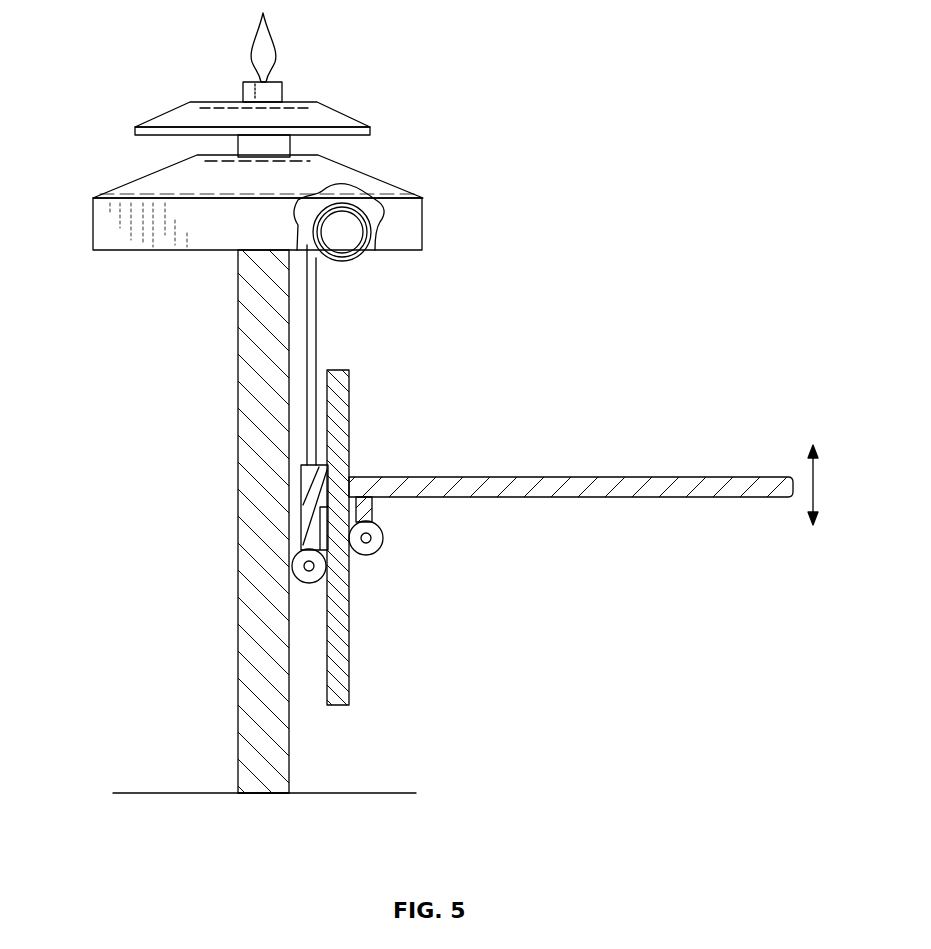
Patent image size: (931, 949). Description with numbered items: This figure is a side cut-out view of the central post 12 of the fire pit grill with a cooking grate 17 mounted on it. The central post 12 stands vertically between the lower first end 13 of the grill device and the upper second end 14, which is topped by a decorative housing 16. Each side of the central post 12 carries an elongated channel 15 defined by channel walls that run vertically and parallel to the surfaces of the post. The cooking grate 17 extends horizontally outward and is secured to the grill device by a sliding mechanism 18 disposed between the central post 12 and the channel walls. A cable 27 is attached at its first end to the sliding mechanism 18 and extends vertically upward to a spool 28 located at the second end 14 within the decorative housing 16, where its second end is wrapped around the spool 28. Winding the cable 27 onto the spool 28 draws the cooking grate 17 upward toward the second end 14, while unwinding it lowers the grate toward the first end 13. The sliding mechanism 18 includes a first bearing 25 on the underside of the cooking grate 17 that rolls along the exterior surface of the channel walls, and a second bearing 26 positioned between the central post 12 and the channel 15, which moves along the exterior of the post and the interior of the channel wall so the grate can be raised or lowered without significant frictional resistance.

The central post 12 is at (238, 490).
The first end 13 is at (235, 791).
The second end 14 is at (238, 255).
The elongated channel 15 is at (338, 428).
The decorative housing 16 is at (350, 112).
The cooking grate 17 is at (697, 477).
The sliding mechanism 18 is at (303, 478).
The first bearing 25 is at (383, 538).
The second bearing 26 is at (312, 583).
The cable 27 is at (317, 295).
The spool 28 is at (343, 232).